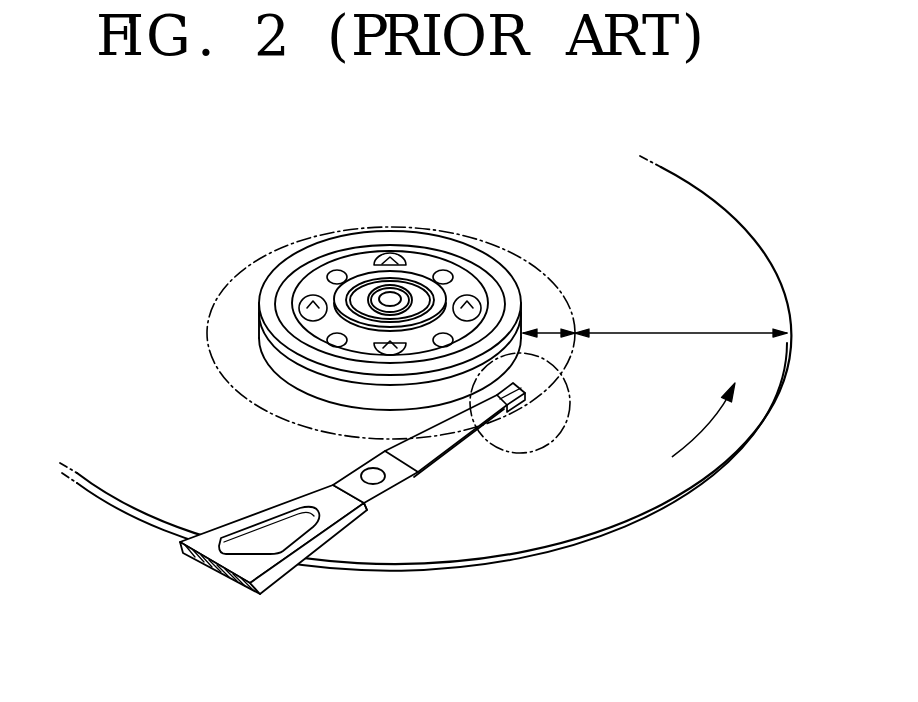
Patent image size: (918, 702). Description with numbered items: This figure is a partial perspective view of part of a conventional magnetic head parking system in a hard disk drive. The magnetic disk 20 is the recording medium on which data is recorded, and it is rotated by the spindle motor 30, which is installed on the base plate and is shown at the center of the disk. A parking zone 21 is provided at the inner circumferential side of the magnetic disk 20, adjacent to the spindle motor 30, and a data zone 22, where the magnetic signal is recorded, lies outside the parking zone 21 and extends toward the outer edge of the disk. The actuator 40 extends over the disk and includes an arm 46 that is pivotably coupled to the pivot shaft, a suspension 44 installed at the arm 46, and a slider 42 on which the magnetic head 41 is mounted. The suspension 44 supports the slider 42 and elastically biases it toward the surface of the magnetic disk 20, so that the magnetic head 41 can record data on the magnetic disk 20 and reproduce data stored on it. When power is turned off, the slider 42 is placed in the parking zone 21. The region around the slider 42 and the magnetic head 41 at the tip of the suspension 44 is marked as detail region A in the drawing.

The magnetic disk 20 is at (740, 268).
The parking zone 21 is at (548, 327).
The data zone 22 is at (669, 332).
The spindle motor 30 is at (357, 262).
The actuator 40 is at (374, 518).
The magnetic head 41 is at (520, 403).
The slider 42 is at (503, 410).
The suspension 44 is at (440, 457).
The arm 46 is at (242, 521).
The detail region A is at (563, 428).